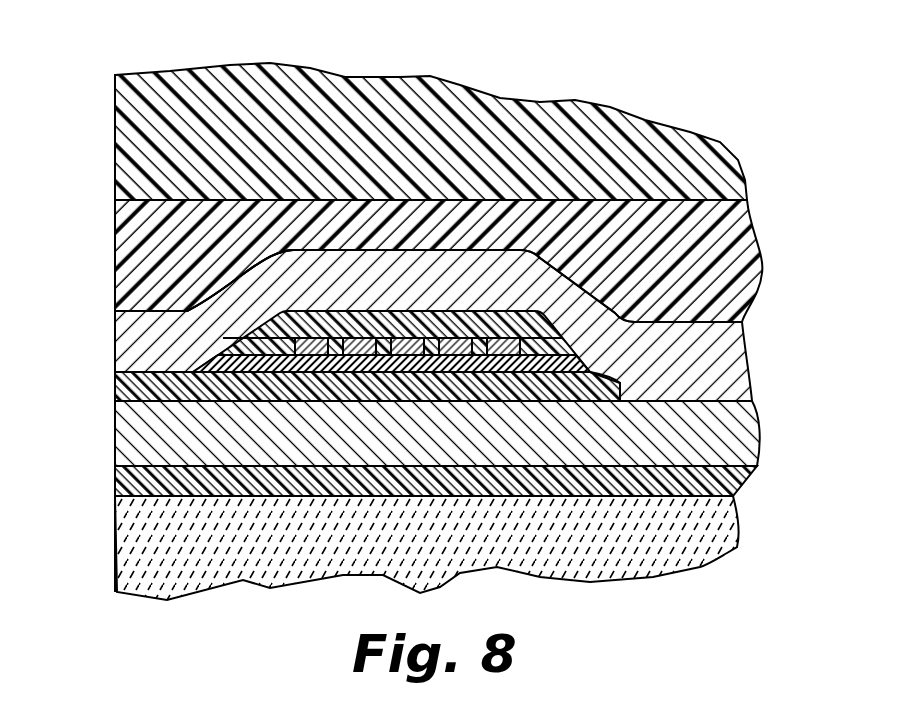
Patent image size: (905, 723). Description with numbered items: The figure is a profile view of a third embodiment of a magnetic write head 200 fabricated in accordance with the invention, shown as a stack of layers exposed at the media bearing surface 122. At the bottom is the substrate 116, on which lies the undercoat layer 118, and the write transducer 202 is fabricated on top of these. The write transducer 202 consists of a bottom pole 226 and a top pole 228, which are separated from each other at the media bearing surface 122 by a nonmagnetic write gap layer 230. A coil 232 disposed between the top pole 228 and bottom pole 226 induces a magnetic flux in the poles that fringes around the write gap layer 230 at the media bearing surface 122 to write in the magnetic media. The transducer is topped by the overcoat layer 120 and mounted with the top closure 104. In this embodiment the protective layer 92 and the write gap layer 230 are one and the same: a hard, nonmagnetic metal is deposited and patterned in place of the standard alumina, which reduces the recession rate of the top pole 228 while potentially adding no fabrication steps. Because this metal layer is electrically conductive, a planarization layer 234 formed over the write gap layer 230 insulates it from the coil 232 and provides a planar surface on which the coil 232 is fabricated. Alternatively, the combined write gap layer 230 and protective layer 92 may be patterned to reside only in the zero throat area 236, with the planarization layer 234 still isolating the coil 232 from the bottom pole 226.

The magnetic write head 200 is at (441, 306).
The media bearing surface 122 is at (114, 173).
The top closure 104 is at (710, 190).
The overcoat layer 120 is at (752, 247).
The zero throat area 236 is at (197, 279).
The write transducer 202 is at (448, 359).
The top pole 228 is at (735, 371).
The protective layer 92 is at (543, 398).
The write gap layer 230 is at (381, 410).
The bottom pole 226 is at (738, 433).
The coil 232 is at (319, 352).
The planarization layer 234 is at (410, 357).
The undercoat layer 118 is at (741, 483).
The substrate 116 is at (713, 538).